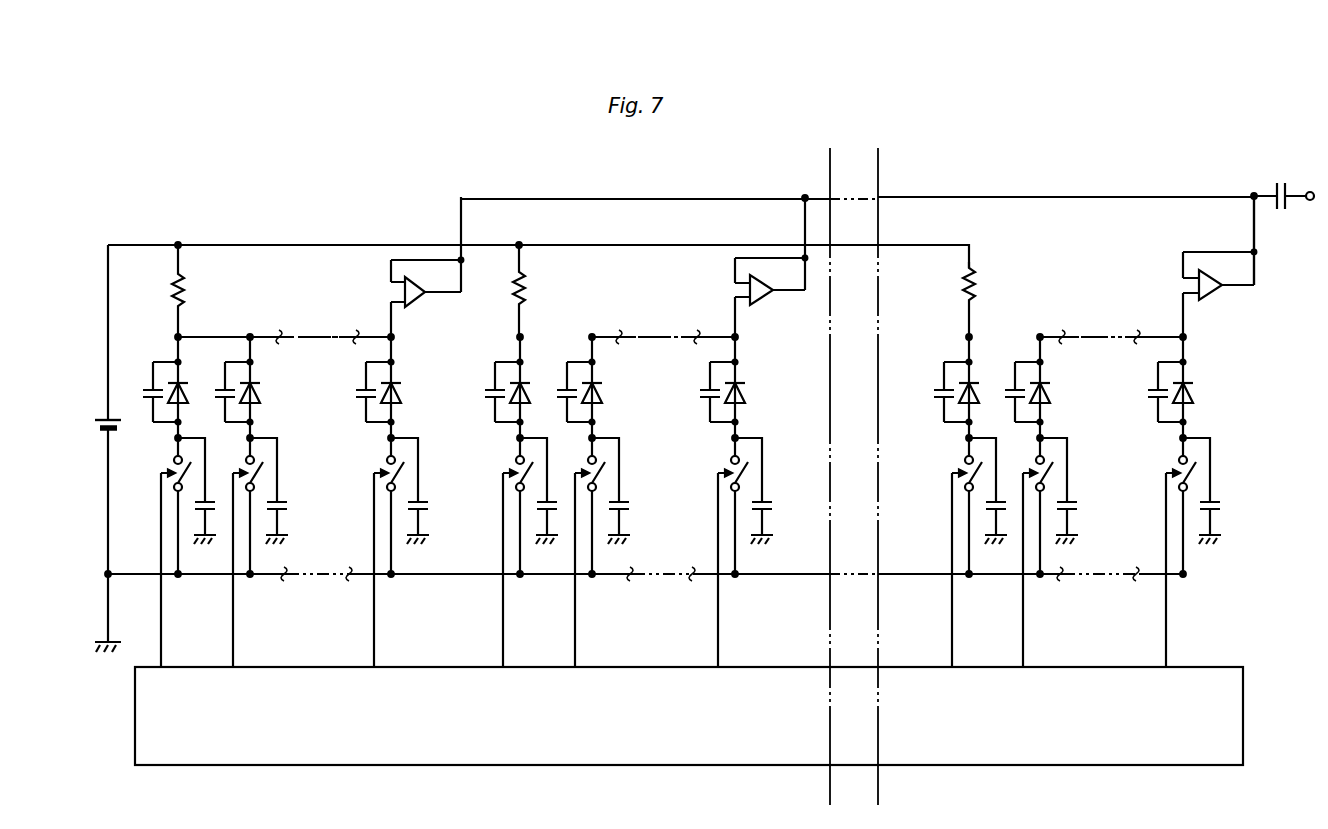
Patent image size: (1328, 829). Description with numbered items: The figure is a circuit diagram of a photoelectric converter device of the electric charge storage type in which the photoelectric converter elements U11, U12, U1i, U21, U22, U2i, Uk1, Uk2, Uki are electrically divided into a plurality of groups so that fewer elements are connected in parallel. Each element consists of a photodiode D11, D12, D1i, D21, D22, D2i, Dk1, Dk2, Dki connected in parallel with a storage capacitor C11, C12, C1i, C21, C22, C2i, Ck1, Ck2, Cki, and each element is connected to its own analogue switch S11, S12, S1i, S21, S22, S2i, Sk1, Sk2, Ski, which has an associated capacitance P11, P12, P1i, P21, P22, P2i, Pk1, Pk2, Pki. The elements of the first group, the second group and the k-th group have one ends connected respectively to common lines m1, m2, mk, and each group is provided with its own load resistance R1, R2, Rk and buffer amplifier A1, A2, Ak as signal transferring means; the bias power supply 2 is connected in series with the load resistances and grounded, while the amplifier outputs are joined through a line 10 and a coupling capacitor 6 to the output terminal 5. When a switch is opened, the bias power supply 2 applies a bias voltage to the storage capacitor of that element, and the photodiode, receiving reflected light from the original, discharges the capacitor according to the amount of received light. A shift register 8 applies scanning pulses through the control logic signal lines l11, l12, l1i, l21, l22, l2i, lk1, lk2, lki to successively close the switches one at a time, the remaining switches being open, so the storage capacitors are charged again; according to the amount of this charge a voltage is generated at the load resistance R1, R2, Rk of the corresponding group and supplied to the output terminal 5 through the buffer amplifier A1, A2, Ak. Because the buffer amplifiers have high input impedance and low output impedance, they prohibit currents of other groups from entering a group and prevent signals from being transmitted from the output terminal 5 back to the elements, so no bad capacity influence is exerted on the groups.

The bias power supply 2 is at (112, 427).
The output terminal 5 is at (1310, 200).
The coupling capacitor 6 is at (1277, 185).
The shift register 8 is at (135, 733).
The output line 10 is at (1256, 202).
The load resistance R1 is at (184, 294).
The load resistance R2 is at (525, 294).
The load resistance Rk is at (976, 284).
The buffer amplifier A1 is at (419, 299).
The buffer amplifier A2 is at (750, 292).
The buffer amplifier Ak is at (1213, 293).
The common line m1 is at (287, 337).
The common line m2 is at (624, 338).
The common line mk is at (1065, 337).
The photoelectric converter element U11 is at (165, 348).
The photoelectric converter element U12 is at (236, 348).
The photoelectric converter element U1i is at (377, 348).
The photoelectric converter element U21 is at (506, 350).
The photoelectric converter element U22 is at (577, 348).
The photoelectric converter element U2i is at (717, 352).
The photoelectric converter element Uk1 is at (954, 351).
The photoelectric converter element Uk2 is at (1025, 348).
The photoelectric converter element Uki is at (1167, 351).
The storage capacitor C11 is at (150, 390).
The storage capacitor C12 is at (223, 398).
The storage capacitor C1i is at (366, 378).
The storage capacitor C21 is at (494, 390).
The storage capacitor C22 is at (566, 398).
The storage capacitor C2i is at (708, 391).
The storage capacitor Ck1 is at (942, 390).
The storage capacitor Ck2 is at (1014, 395).
The storage capacitor Cki is at (1157, 391).
The photodiode D11 is at (187, 384).
The photodiode D12 is at (270, 379).
The photodiode D1i is at (397, 391).
The photodiode D21 is at (527, 385).
The photodiode D22 is at (599, 389).
The photodiode D2i is at (742, 390).
The photodiode Dk1 is at (976, 385).
The photodiode Dk2 is at (1048, 389).
The photodiode Dki is at (1192, 389).
The analogue switch S11 is at (178, 476).
The analogue switch S12 is at (248, 478).
The analogue switch S1i is at (390, 476).
The analogue switch S21 is at (518, 478).
The analogue switch S22 is at (592, 478).
The analogue switch S2i is at (733, 476).
The analogue switch Sk1 is at (967, 476).
The analogue switch Sk2 is at (1038, 476).
The analogue switch Ski is at (1181, 476).
The capacitance of analogue switch P11 is at (204, 505).
The capacitance of analogue switch P12 is at (280, 505).
The capacitance of analogue switch P1i is at (420, 507).
The capacitance of analogue switch P21 is at (546, 508).
The capacitance of analogue switch P22 is at (620, 506).
The capacitance of analogue switch P2i is at (765, 506).
The capacitance of analogue switch Pk1 is at (994, 508).
The capacitance of analogue switch Pk2 is at (1068, 506).
The capacitance of analogue switch Pki is at (1213, 506).
The control logic signal line l11 is at (162, 641).
The control logic signal line l12 is at (234, 641).
The control logic signal line l1i is at (375, 641).
The control logic signal line l21 is at (504, 641).
The control logic signal line l22 is at (576, 641).
The control logic signal line l2i is at (719, 641).
The control logic signal line lk1 is at (953, 641).
The control logic signal line lk2 is at (1024, 641).
The control logic signal line lki is at (1167, 641).